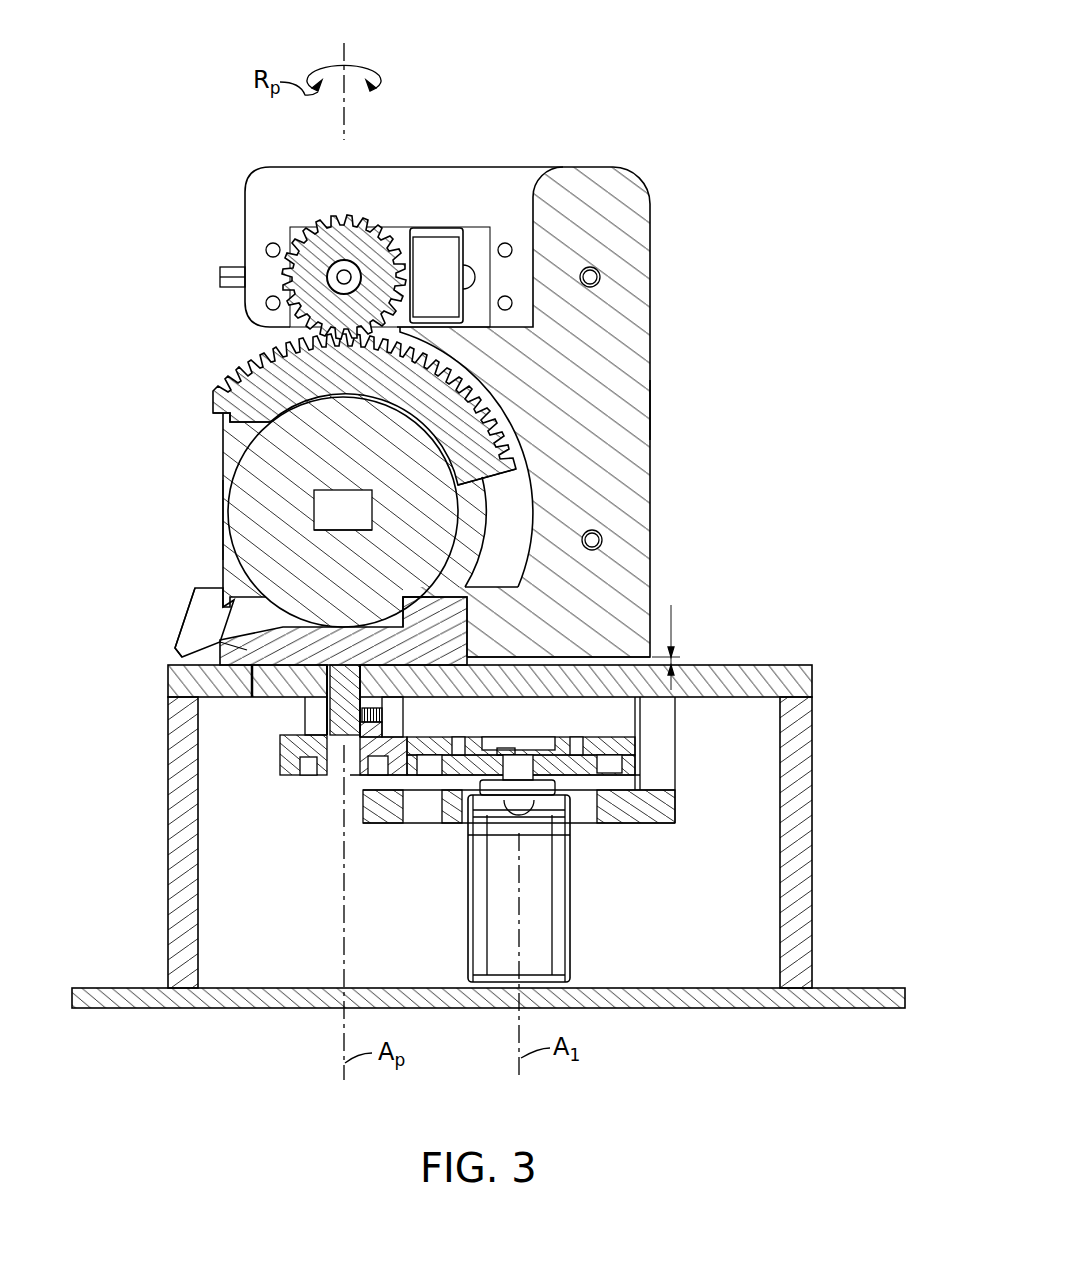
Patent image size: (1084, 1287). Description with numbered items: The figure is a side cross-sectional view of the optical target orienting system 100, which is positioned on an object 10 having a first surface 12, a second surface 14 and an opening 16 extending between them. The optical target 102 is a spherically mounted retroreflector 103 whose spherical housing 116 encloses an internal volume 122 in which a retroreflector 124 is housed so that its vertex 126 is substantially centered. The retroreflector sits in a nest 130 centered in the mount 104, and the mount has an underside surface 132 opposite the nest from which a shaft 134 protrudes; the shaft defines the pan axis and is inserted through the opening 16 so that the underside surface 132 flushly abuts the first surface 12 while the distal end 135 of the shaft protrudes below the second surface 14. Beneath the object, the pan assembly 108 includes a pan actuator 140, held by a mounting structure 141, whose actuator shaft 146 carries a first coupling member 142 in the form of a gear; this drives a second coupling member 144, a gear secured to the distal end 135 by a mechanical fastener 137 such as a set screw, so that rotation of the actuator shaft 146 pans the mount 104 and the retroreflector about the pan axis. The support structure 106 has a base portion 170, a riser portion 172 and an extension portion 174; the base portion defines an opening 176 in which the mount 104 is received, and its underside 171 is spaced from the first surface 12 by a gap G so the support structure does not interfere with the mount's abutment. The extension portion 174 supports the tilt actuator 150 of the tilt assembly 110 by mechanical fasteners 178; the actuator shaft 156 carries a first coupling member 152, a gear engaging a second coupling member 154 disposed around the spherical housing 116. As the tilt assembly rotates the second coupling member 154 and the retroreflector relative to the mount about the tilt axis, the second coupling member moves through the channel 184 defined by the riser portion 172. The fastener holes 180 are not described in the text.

The optical target orienting system 100 is at (780, 92).
The object 10 is at (710, 677).
The first surface 12 is at (760, 662).
The second surface 14 is at (728, 700).
The opening 16 is at (353, 670).
The optical target 102 is at (222, 465).
The spherically mounted retroreflector 103 is at (226, 503).
The mount 104 is at (247, 650).
The support structure 106 is at (652, 362).
The pan assembly 108 is at (476, 823).
The tilt assembly 110 is at (210, 316).
The spherical housing 116 is at (212, 418).
The internal volume 122 is at (238, 536).
The retroreflector 124 is at (322, 536).
The vertex 126 is at (343, 512).
The nest 130 is at (403, 598).
The underside surface 132 is at (253, 668).
The shaft 134 is at (338, 727).
The distal end 135 is at (330, 757).
The mechanical fastener 137 is at (382, 718).
The pan actuator 140 is at (572, 900).
The mounting structure 141 is at (677, 780).
The first coupling member 142 is at (433, 767).
The second coupling member 144 is at (280, 765).
The actuator shaft 146 is at (523, 768).
The tilt actuator 150 is at (432, 243).
The first coupling member 152 is at (346, 228).
The second coupling member 154 is at (493, 400).
The actuator shaft 156 is at (318, 265).
The base portion 170 is at (188, 640).
The underside 171 is at (600, 663).
The riser portion 172 is at (652, 417).
The extension portion 174 is at (497, 168).
The opening 176 is at (467, 628).
The mechanical fasteners 178 is at (503, 243).
The fastener holes 180 is at (598, 280).
The channel 184 is at (523, 470).
The gap G is at (671, 605).